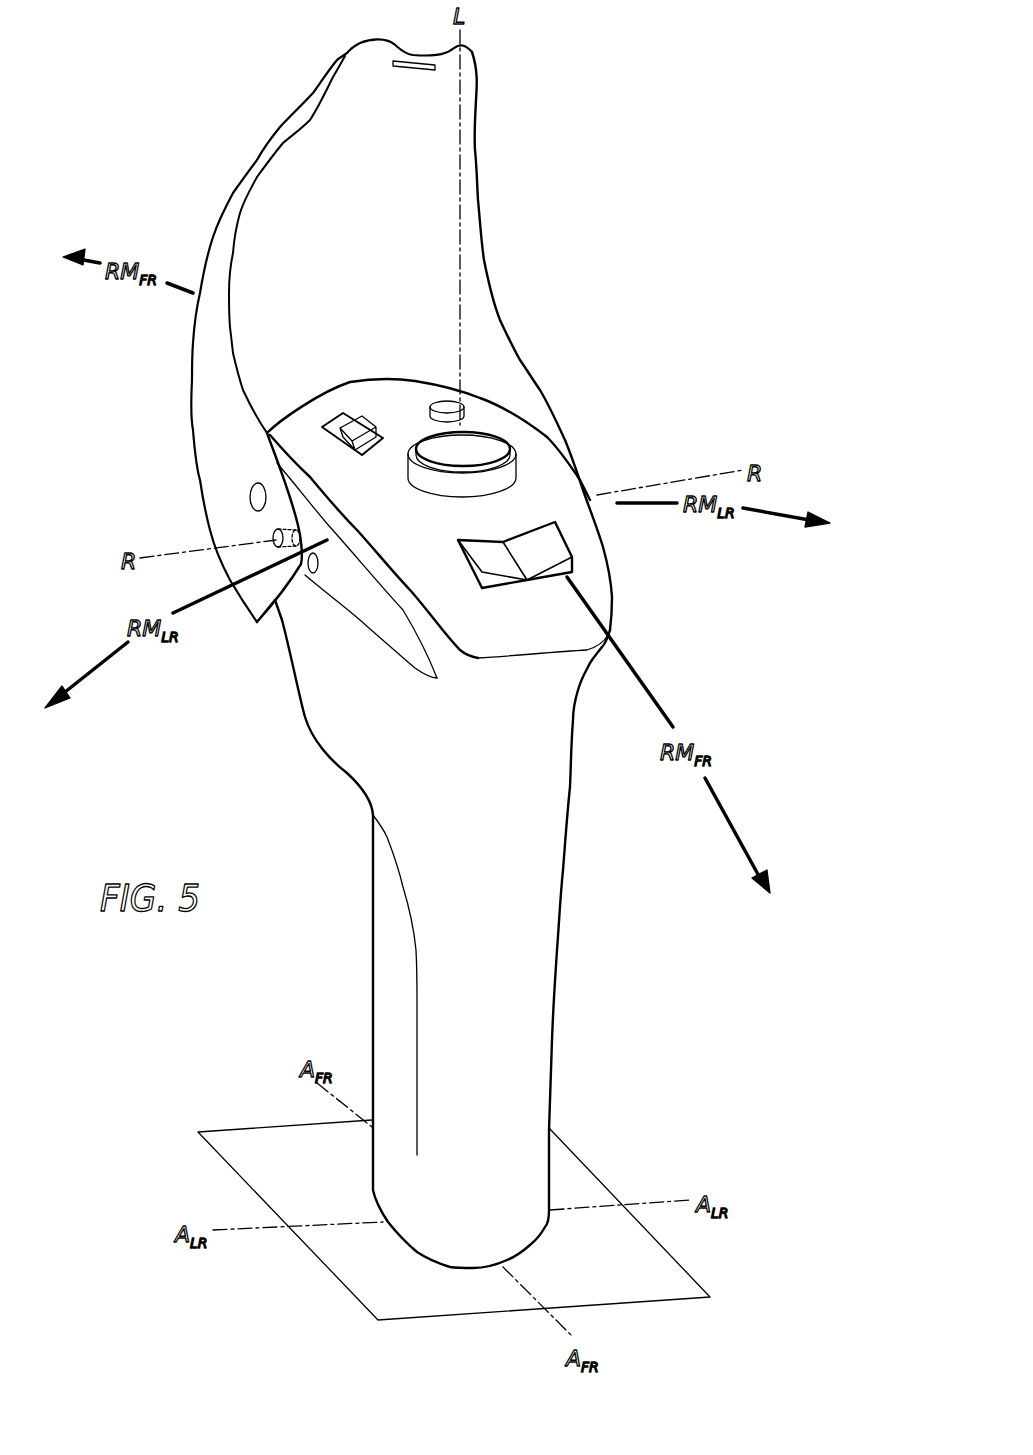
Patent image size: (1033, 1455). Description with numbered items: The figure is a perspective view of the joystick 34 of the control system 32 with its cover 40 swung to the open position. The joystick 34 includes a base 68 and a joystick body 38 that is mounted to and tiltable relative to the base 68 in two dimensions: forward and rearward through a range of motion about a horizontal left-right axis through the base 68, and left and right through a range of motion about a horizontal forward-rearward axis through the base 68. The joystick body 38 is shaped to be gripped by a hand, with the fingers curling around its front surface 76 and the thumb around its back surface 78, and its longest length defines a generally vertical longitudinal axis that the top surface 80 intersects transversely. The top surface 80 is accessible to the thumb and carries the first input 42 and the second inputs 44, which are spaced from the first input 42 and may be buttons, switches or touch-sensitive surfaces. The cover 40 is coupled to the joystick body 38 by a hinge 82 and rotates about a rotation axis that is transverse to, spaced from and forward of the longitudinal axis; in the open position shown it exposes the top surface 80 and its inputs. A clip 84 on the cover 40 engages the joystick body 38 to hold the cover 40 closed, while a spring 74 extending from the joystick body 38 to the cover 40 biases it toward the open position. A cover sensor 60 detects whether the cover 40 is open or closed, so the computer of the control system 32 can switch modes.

The control system 32 is at (645, 95).
The joystick 34 is at (562, 902).
The joystick body 38 is at (373, 988).
The cover 40 is at (480, 210).
The first input 42 is at (517, 450).
The second inputs 44 is at (362, 417).
The cover sensor 60 is at (253, 487).
The base 68 is at (243, 1127).
The spring 74 is at (300, 527).
The front surface 76 is at (373, 905).
The back surface 78 is at (513, 963).
The top surface 80 is at (553, 500).
The hinge 82 is at (272, 535).
The clip 84 is at (413, 70).